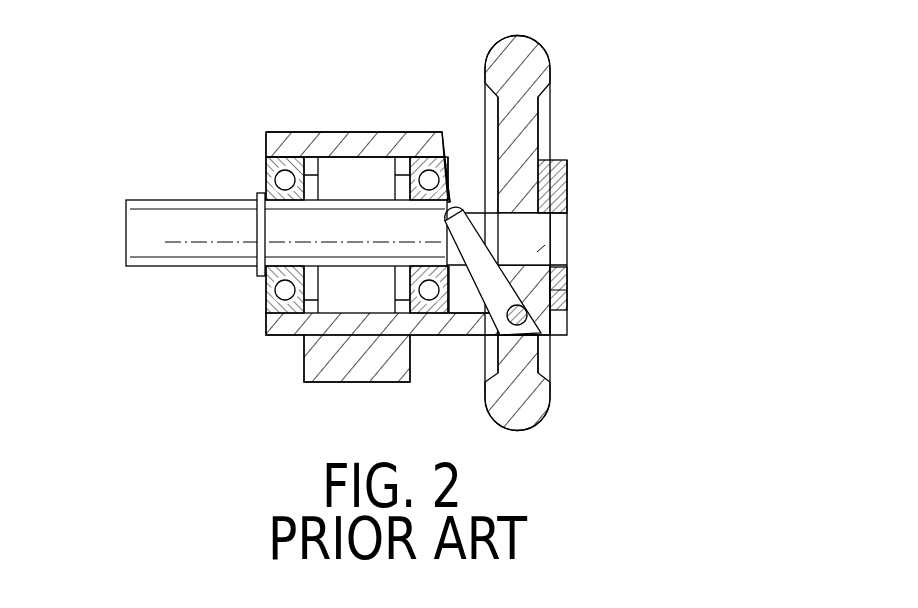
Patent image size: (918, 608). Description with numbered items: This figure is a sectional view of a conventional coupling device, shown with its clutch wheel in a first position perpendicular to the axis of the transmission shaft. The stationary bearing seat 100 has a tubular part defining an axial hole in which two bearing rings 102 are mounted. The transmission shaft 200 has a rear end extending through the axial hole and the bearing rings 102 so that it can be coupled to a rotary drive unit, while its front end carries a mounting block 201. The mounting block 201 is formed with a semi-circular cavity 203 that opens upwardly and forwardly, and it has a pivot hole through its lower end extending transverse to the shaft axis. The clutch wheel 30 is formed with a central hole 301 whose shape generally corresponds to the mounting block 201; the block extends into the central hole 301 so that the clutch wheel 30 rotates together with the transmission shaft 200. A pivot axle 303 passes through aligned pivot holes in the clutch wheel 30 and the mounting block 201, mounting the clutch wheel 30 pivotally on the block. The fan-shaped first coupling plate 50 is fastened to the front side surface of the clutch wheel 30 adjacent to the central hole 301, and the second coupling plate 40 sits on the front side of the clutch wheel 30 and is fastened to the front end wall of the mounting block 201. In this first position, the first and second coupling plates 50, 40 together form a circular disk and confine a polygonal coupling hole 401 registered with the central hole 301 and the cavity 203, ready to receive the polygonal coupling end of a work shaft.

The bearing seat 100 is at (291, 129).
The bearing rings 102 is at (258, 162).
The transmission shaft 200 is at (145, 199).
The mounting block 201 is at (520, 294).
The semi-circular cavity 203 is at (537, 252).
The clutch wheel 30 is at (605, 229).
The central hole 301 is at (530, 146).
The pivot axle 303 is at (528, 315).
The second coupling plate 40 is at (615, 247).
The polygonal coupling hole 401 is at (556, 219).
The first coupling plate 50 is at (569, 175).